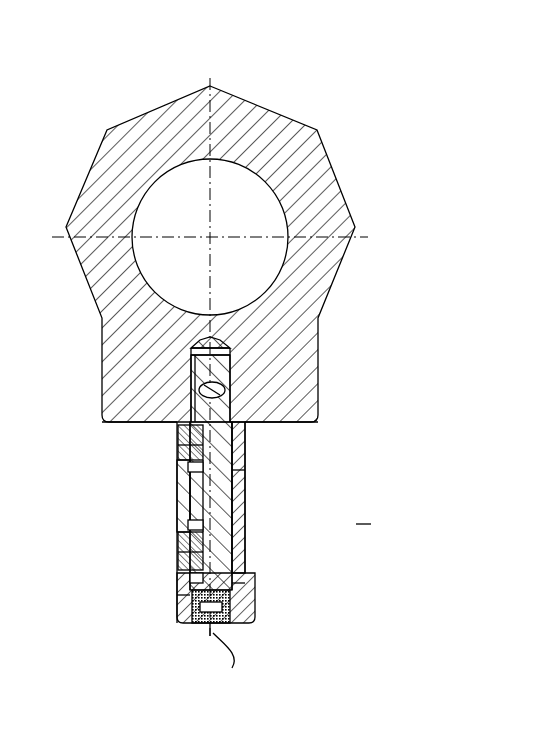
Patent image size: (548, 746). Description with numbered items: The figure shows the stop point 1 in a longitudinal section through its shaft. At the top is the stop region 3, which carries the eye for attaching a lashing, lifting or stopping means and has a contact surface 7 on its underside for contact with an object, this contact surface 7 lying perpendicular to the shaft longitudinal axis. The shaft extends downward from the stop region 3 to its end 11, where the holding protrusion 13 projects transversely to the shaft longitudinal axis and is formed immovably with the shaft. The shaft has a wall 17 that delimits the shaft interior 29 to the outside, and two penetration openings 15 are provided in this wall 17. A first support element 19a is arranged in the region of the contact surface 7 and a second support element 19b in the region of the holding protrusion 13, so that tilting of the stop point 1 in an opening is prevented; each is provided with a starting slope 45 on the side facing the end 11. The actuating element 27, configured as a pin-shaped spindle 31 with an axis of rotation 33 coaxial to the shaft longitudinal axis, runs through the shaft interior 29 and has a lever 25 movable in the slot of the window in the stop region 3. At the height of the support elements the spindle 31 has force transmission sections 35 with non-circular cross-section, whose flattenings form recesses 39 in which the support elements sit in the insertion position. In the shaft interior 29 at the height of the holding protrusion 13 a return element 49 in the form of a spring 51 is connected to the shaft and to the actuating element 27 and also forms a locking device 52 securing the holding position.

The stop point 1 is at (282, 74).
The stop region 3 is at (373, 90).
The contact surface 7 is at (114, 427).
The end 11 is at (150, 615).
The holding protrusion 13 is at (249, 602).
The penetration openings 15 is at (153, 430).
The wall 17 is at (178, 495).
The first support element 19a is at (180, 455).
The second support element 19b is at (180, 530).
The lever 25 is at (200, 390).
The actuating element 27 is at (245, 525).
The shaft interior 29 is at (245, 505).
The spindle 31 is at (245, 587).
The axis of rotation 33 is at (208, 632).
The force transmission sections 35 is at (245, 448).
The recesses 39 is at (245, 470).
The starting slopes 45 is at (180, 478).
The return element 49 is at (126, 628).
The spring 51 is at (211, 606).
The locking device 52 is at (187, 627).